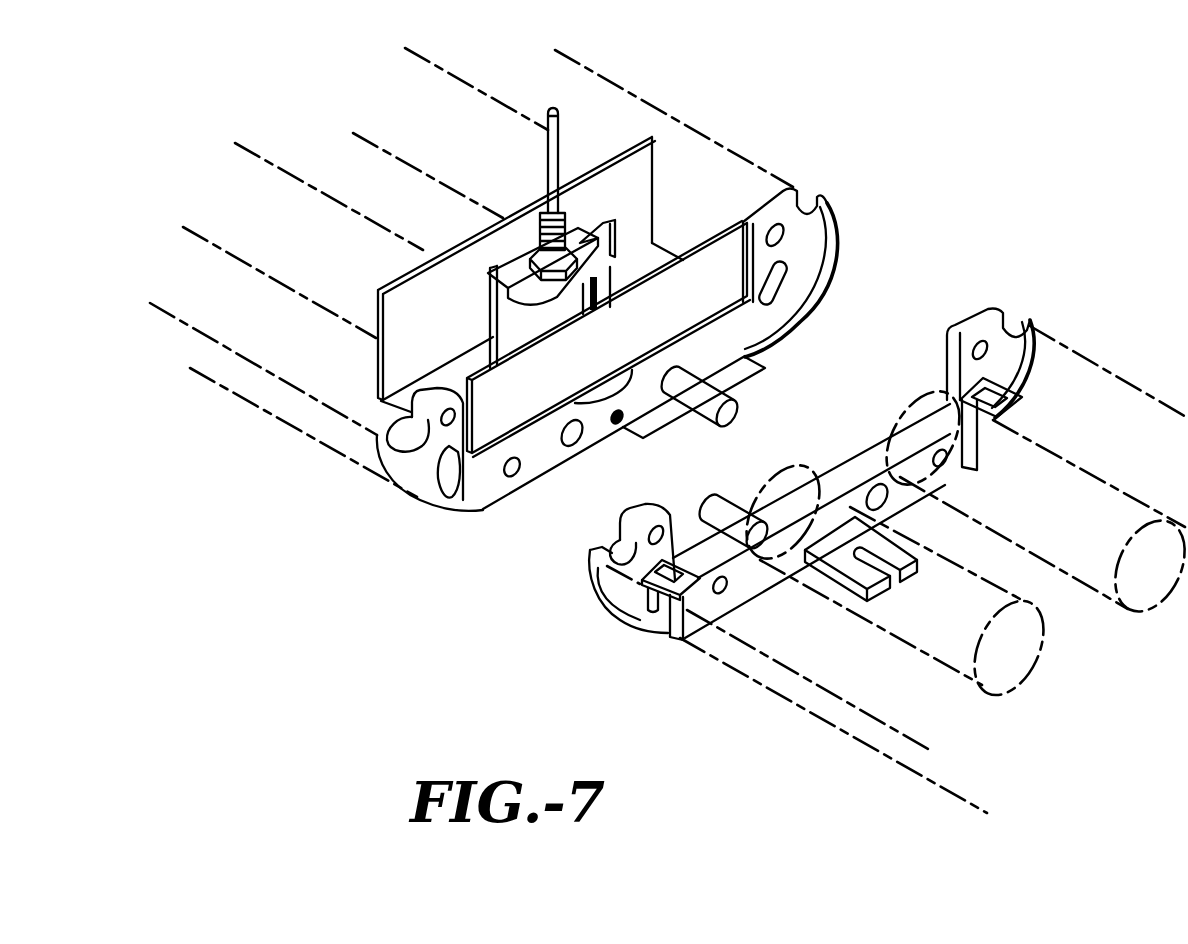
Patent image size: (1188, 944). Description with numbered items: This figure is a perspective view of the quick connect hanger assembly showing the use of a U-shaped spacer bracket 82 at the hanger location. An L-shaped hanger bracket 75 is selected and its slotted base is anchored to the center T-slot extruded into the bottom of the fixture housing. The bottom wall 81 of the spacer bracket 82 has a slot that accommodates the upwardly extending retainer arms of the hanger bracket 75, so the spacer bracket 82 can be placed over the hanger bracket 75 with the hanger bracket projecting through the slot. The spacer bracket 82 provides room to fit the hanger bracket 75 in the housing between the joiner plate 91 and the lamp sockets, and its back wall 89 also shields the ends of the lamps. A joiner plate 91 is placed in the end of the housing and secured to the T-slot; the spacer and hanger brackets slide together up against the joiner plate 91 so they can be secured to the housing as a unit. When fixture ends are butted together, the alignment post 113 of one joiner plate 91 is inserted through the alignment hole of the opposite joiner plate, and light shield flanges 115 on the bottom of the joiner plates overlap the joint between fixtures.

The back wall 89 is at (640, 170).
The L-shaped hanger bracket 75 is at (608, 232).
The spacer bracket 82 is at (718, 262).
The joiner plate 91 is at (790, 250).
The light shield flange 115 is at (803, 296).
The alignment post 113 is at (737, 401).
The bottom wall 81 is at (378, 434).